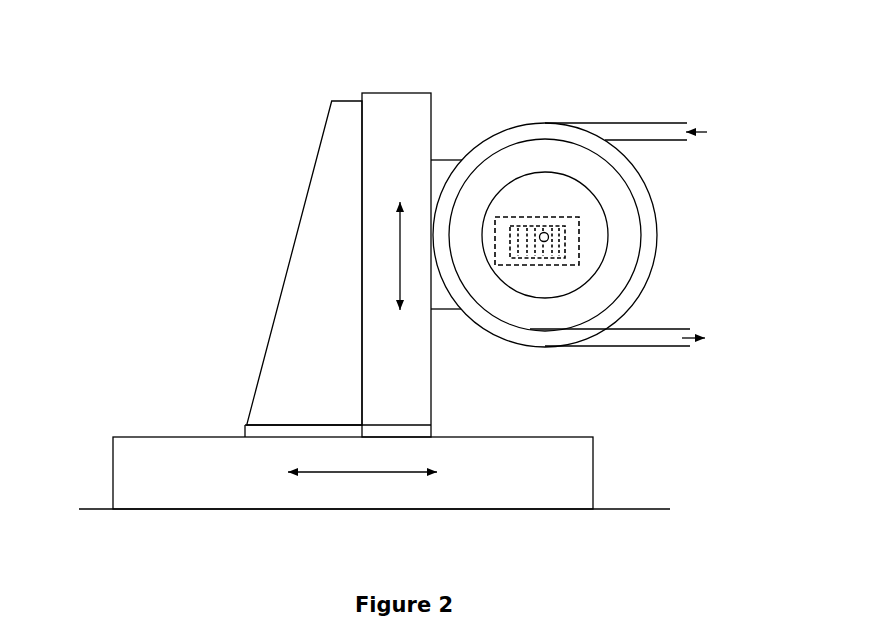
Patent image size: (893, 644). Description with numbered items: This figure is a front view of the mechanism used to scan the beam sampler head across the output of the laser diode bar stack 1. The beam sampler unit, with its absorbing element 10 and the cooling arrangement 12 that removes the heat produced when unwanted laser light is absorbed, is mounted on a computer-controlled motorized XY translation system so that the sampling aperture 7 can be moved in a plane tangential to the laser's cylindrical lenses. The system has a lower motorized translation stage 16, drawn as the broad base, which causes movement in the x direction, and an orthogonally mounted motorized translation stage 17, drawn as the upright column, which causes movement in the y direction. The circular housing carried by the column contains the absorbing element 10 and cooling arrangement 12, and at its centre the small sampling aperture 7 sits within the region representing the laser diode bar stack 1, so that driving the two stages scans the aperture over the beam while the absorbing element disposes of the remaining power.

The laser diode bar stack 1 is at (557, 268).
The sampling aperture 7 is at (551, 237).
The absorbing element 10 is at (639, 265).
The cooling arrangement 12 is at (515, 122).
The lower motorized translation stage 16 is at (567, 490).
The motorized translation stage 17 is at (397, 96).